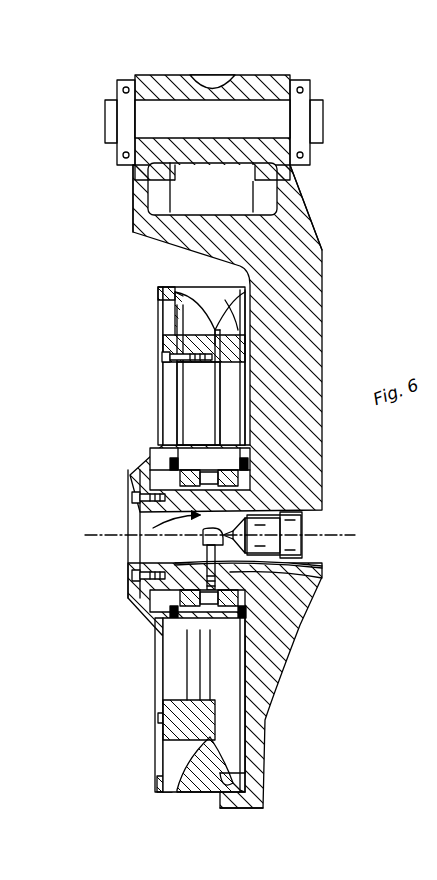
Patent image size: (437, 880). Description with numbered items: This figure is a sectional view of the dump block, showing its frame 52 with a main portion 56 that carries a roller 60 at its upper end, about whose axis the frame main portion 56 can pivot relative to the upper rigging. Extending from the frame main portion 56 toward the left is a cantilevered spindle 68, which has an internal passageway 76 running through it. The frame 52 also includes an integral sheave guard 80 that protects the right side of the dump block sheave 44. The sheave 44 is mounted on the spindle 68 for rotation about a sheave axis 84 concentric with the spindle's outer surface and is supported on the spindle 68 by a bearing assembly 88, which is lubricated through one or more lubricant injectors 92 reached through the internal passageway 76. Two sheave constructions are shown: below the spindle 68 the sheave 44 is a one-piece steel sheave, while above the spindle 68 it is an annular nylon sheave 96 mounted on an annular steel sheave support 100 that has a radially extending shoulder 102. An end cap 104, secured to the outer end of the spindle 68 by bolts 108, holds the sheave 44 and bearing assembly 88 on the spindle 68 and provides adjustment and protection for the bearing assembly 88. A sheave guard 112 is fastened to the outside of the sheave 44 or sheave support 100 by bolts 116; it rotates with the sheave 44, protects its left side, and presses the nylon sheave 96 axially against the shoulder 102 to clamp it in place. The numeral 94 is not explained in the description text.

The dump block sheave 44 is at (196, 789).
The frame 52 is at (318, 266).
The frame main portion 56 is at (302, 325).
The roller 60 is at (228, 82).
The cantilevered spindle 68 is at (203, 548).
The internal passageway 76 is at (300, 568).
The integral sheave guard 80 is at (240, 813).
The sheave axis 84 is at (340, 535).
The bearing assembly 88 is at (150, 605).
The lubricant injectors 92 is at (153, 528).
The actuator body 94 is at (298, 518).
The annular nylon sheave 96 is at (176, 350).
The annular steel sheave support 100 is at (203, 370).
The radially extending shoulder 102 is at (216, 307).
The end cap 104 is at (135, 470).
The bolts 108 is at (130, 497).
The sheave guard 112 is at (158, 293).
The bolts 116 is at (160, 357).